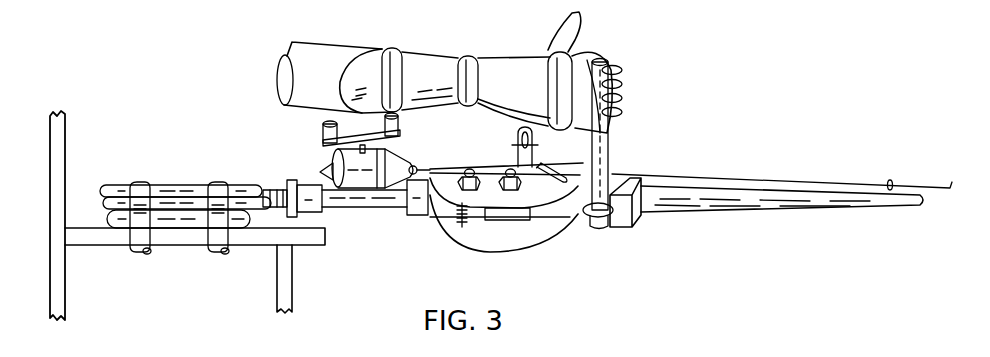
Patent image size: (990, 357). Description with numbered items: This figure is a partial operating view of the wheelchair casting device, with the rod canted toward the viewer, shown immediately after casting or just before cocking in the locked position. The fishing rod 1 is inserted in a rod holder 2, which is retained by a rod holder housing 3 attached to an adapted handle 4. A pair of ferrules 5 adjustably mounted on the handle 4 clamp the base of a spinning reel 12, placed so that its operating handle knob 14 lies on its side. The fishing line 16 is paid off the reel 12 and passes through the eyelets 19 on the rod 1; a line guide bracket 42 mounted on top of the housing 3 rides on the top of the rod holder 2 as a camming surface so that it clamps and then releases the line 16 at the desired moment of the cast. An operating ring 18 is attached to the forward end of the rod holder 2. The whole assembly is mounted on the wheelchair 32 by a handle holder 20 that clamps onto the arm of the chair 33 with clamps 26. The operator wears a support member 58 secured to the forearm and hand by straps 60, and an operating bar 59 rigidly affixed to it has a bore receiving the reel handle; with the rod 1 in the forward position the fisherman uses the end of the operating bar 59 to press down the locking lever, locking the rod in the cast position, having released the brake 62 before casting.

The fishing rod 1 is at (733, 210).
The rod holder 2 is at (578, 222).
The rod holder housing 3 is at (520, 243).
The handle 4 is at (265, 189).
The ferrules 5 is at (320, 214).
The spinning reel 12 is at (403, 162).
The operating handle knob 14 is at (323, 128).
The fishing line 16 is at (703, 172).
The operating ring 18 is at (612, 220).
The eyelets 19 is at (891, 180).
The handle holder 20 is at (186, 184).
The clamps 26 is at (213, 253).
The wheelchair 32 is at (66, 160).
The arm of the chair 33 is at (83, 247).
The line guide bracket 42 is at (519, 133).
The support member 58 is at (505, 67).
The operating bar 59 is at (608, 147).
The straps 60 is at (465, 58).
The brake 62 is at (325, 169).